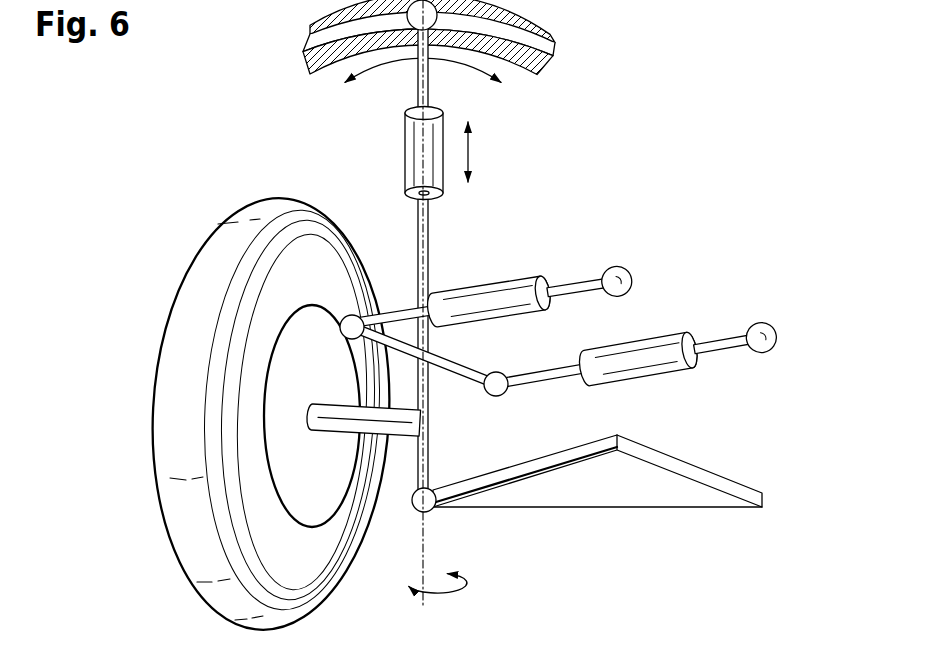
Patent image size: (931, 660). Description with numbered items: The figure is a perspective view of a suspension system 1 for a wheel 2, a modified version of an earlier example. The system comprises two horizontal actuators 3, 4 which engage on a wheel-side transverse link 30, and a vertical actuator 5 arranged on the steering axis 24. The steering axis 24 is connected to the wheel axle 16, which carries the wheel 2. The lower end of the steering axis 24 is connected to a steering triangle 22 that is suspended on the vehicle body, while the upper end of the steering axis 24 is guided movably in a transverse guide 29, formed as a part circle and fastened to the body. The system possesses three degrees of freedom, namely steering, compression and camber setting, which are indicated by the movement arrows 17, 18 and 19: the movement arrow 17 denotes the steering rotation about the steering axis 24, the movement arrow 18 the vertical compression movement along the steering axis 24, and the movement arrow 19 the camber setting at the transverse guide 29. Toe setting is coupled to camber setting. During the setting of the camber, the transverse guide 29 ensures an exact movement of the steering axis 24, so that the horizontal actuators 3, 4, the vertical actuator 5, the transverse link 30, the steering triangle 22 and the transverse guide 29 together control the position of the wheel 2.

The suspension system 1 is at (641, 151).
The wheel 2 is at (200, 264).
The horizontal actuator 3 is at (660, 350).
The horizontal actuator 4 is at (507, 296).
The vertical actuator 5 is at (411, 160).
The wheel axle 16 is at (326, 420).
The movement arrow 17 is at (455, 592).
The movement arrow 18 is at (475, 150).
The movement arrow 19 is at (372, 70).
The steering triangle 22 is at (640, 498).
The steering axis 24 is at (421, 228).
The transverse guide 29 is at (523, 40).
The wheel-side transverse link 30 is at (460, 367).